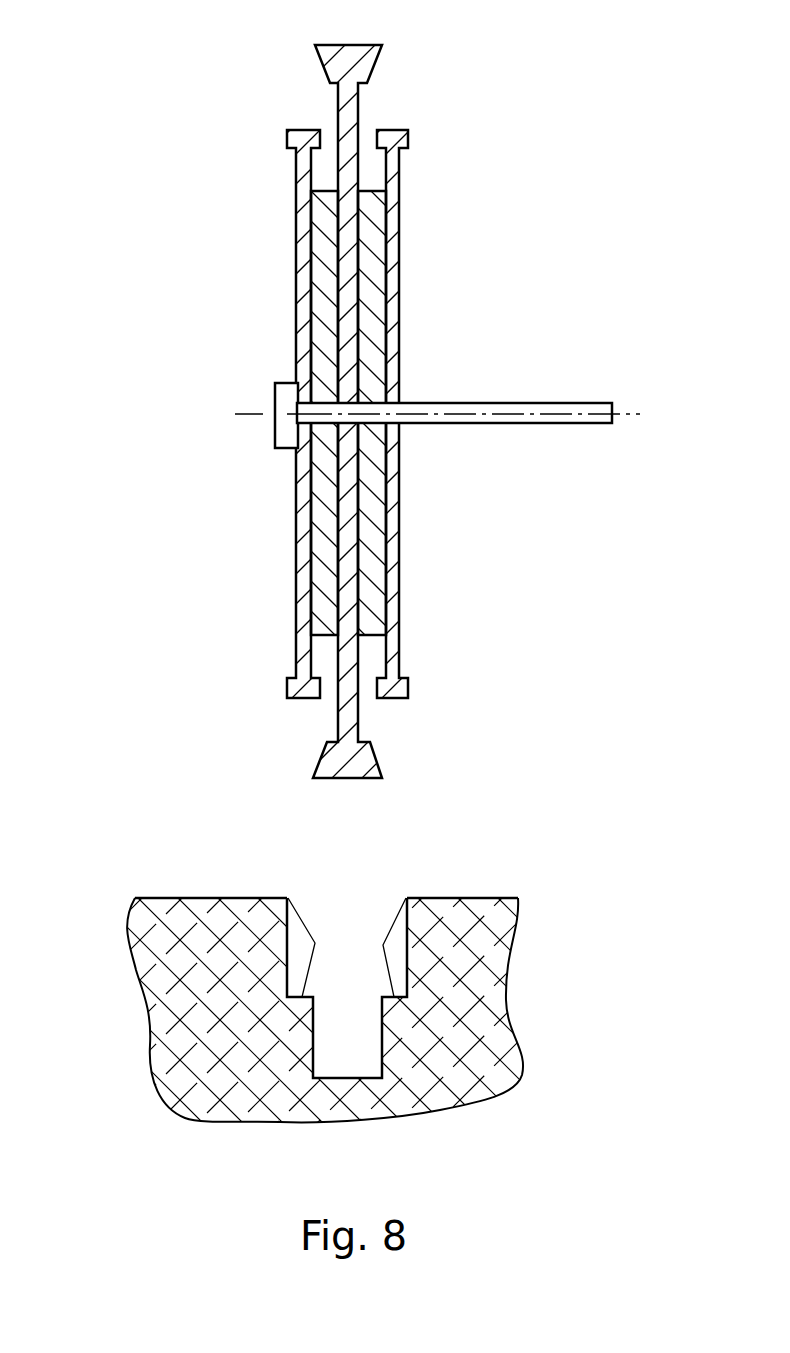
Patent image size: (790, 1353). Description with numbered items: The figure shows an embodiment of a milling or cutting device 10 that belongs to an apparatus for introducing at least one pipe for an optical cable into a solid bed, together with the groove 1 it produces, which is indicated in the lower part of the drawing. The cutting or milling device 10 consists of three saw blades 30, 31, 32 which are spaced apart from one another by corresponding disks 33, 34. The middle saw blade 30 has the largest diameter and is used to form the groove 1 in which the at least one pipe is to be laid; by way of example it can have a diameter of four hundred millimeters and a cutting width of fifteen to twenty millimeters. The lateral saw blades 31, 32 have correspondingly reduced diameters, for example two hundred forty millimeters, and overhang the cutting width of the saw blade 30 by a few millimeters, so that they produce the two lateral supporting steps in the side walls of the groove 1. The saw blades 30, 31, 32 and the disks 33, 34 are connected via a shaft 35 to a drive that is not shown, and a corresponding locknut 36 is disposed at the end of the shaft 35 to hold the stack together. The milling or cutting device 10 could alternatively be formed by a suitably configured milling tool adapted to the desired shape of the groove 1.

The milling or cutting device 10 is at (163, 90).
The middle saw blade 30 is at (347, 267).
The lateral saw blade 31 is at (305, 515).
The lateral saw blade 32 is at (392, 578).
The disk 33 is at (325, 315).
The disk 34 is at (368, 513).
The shaft 35 is at (483, 410).
The locknut 36 is at (290, 402).
The groove 1 is at (336, 950).